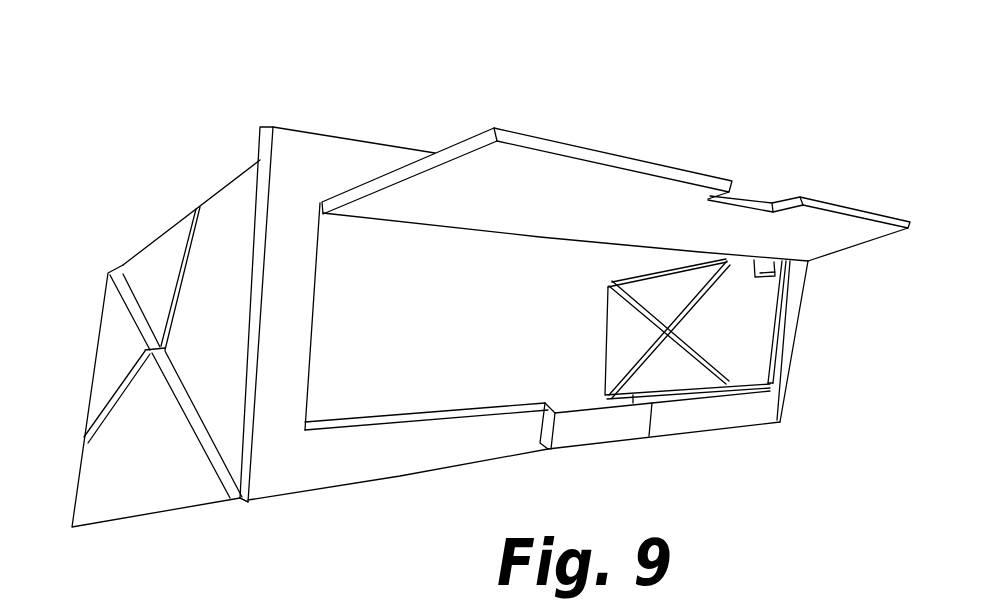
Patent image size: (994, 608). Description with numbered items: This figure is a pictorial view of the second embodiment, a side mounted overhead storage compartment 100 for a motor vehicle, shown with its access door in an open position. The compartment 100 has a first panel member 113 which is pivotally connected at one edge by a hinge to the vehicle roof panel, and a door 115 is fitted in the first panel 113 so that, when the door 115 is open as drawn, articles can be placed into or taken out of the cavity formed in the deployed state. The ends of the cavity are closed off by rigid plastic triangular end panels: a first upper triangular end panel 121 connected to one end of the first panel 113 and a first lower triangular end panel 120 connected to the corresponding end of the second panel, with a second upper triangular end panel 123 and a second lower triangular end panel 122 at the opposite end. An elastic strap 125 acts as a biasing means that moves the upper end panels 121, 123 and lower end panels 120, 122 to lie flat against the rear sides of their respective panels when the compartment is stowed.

The overhead storage compartment 100 is at (273, 122).
The first panel member 113 is at (383, 143).
The door 115 is at (560, 140).
The first lower triangular end panel 120 is at (97, 352).
The first upper triangular end panel 121 is at (155, 240).
The second lower triangular end panel 122 is at (607, 400).
The second upper triangular end panel 123 is at (688, 355).
The elastic strap 125 is at (698, 303).